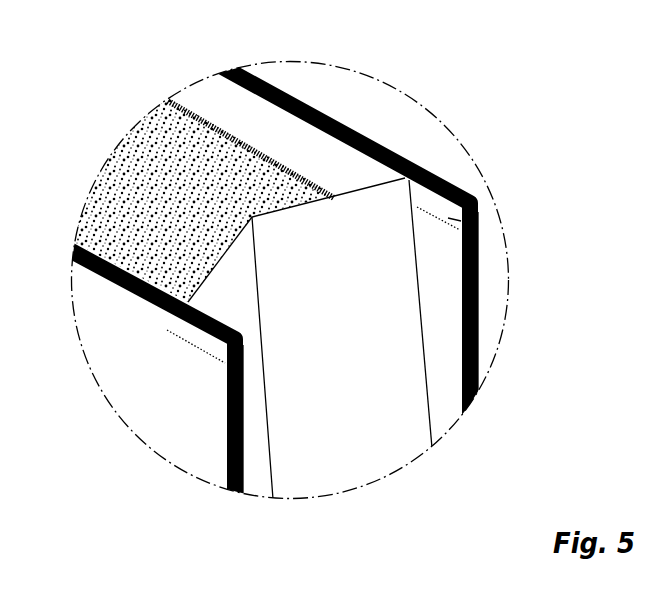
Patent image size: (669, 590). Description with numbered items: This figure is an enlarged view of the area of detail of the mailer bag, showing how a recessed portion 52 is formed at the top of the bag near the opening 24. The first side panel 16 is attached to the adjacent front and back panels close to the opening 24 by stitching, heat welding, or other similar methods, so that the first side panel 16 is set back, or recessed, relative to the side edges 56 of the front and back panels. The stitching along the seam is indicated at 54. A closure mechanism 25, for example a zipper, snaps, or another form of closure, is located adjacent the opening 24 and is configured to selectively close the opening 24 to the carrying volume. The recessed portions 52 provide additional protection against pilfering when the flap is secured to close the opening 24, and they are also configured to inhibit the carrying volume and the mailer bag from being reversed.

The first side panel 16 is at (405, 323).
The opening 24 is at (132, 180).
The closure mechanism 25 is at (220, 123).
The recessed portions 52 is at (413, 157).
The stitch line 54 is at (478, 227).
The side edges 56 is at (478, 265).